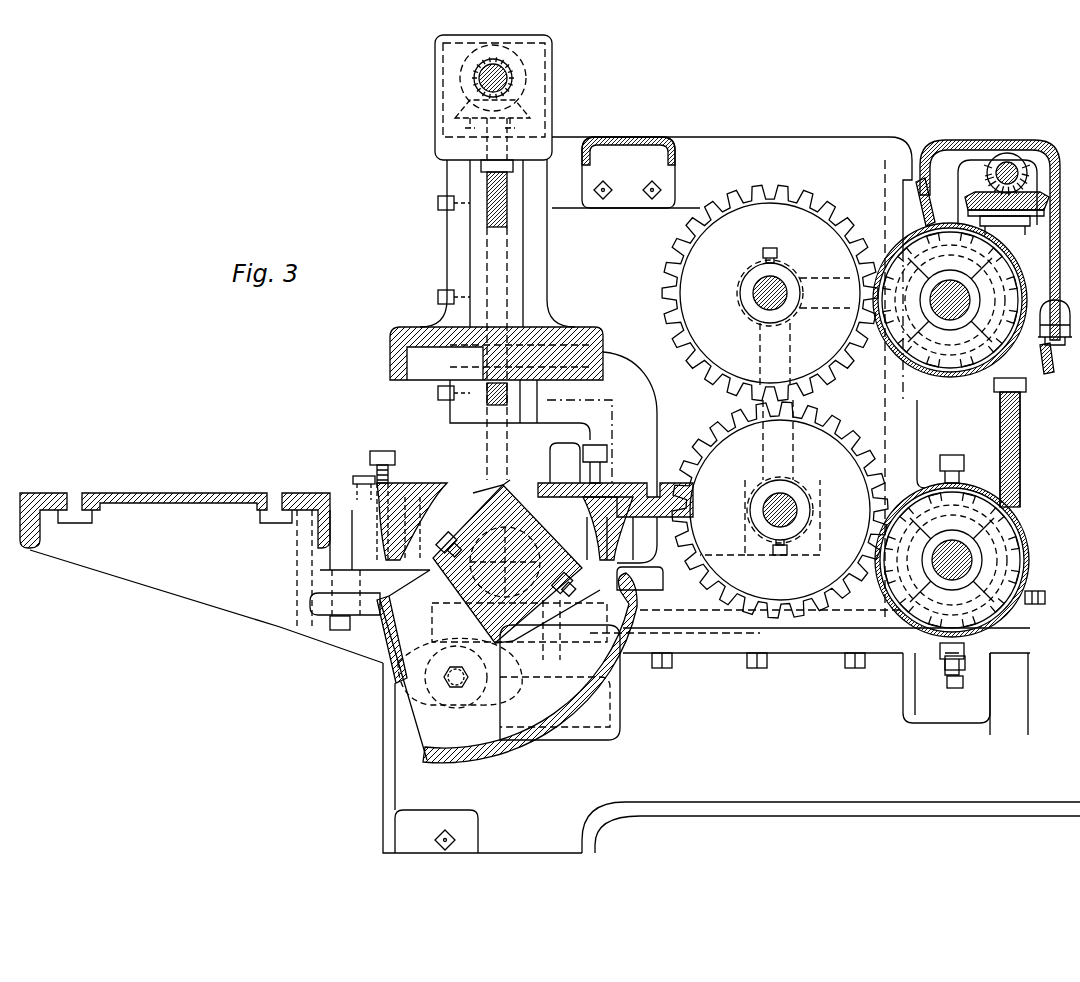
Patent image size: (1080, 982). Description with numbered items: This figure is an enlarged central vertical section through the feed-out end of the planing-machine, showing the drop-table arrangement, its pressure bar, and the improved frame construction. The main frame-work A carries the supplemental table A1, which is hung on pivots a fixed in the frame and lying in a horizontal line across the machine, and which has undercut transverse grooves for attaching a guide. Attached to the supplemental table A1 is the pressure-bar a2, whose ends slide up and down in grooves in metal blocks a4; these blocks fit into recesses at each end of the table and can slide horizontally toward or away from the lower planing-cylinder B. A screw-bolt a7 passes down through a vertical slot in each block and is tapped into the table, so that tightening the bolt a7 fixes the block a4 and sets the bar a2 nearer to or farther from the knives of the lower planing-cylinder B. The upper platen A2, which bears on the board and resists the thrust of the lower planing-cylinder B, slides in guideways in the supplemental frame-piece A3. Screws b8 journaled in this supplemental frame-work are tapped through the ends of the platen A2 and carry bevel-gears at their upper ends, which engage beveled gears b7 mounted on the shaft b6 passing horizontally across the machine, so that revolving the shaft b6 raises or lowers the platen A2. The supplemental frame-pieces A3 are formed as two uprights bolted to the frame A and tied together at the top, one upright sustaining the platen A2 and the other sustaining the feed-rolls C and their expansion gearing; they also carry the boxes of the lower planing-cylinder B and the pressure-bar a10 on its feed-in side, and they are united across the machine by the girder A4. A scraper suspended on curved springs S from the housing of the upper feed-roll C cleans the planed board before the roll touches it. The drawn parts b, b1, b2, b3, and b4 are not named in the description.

The main frame-work A is at (555, 495).
The supplemental table A1 is at (175, 506).
The upper platen A2 is at (420, 325).
The supplemental frame-piece A3 is at (445, 250).
The girder A4 is at (641, 137).
The lower planing-cylinder B is at (500, 480).
The feed-rolls C is at (1014, 247).
The curved springs S is at (1060, 300).
The pivots a is at (448, 682).
The pressure-bar a2 is at (417, 482).
The metal blocks a4 is at (375, 468).
The screw-bolt a7 is at (313, 481).
The pressure-bar a10 is at (624, 480).
The feed wheel b is at (1031, 545).
The bolts b1 is at (662, 672).
The guide b2 is at (920, 214).
The stop b3 is at (1052, 358).
The bearing block b4 is at (1046, 598).
The shaft b6 is at (500, 80).
The beveled gears b7 is at (530, 50).
The screws b8 is at (512, 188).